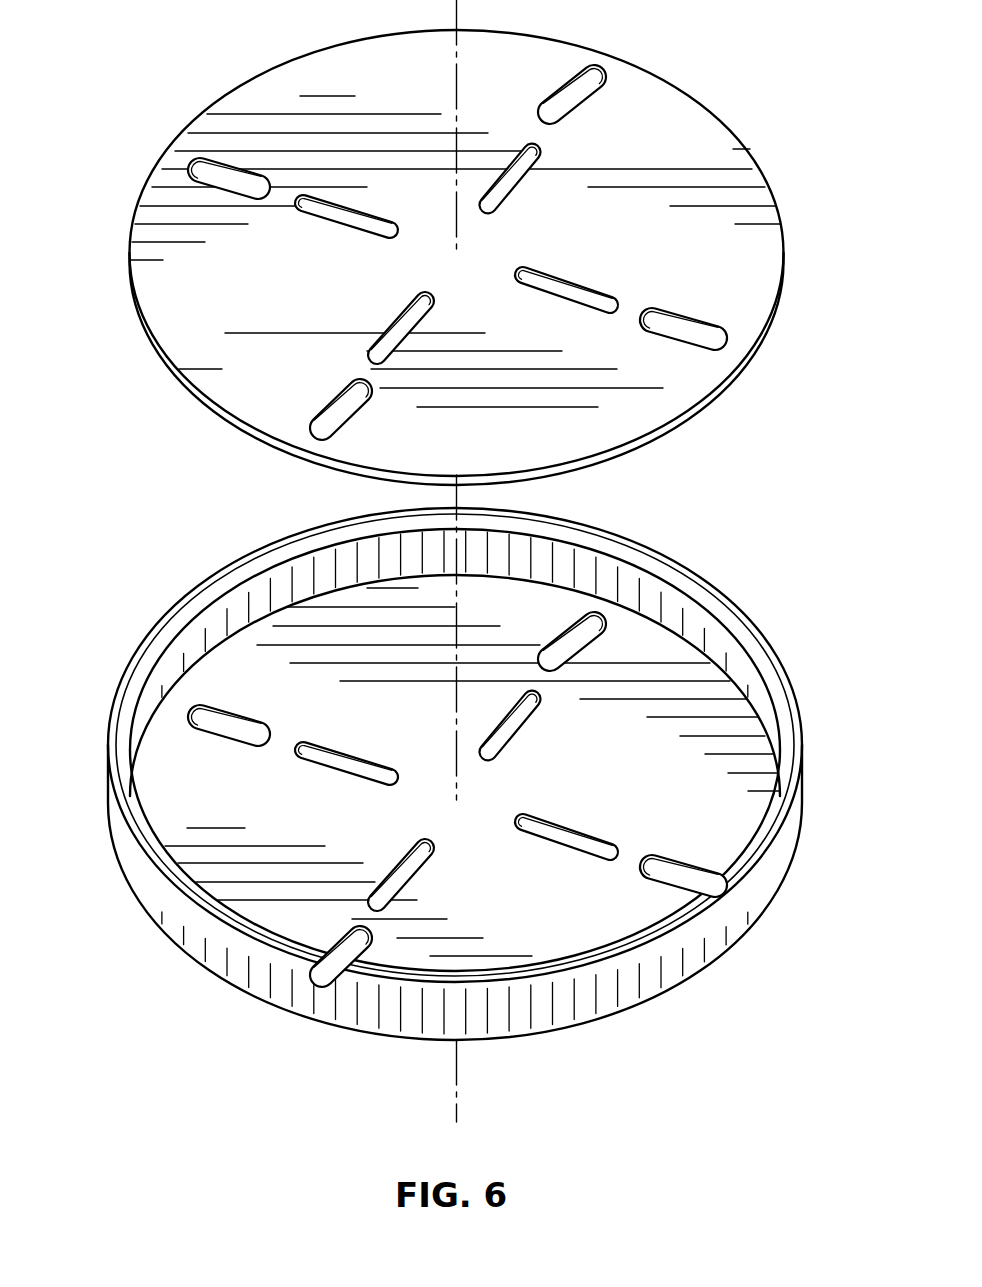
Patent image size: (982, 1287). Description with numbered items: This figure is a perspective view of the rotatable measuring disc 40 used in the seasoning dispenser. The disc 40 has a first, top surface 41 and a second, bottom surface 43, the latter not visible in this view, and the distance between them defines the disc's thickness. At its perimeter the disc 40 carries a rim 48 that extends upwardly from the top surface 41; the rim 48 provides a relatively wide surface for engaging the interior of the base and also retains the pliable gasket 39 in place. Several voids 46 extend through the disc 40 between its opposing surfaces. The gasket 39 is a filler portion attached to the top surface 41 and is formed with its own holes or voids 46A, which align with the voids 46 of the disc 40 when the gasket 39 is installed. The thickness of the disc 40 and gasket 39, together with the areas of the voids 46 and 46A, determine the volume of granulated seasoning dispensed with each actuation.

The gasket 39 is at (457, 257).
The disc 40 is at (447, 561).
The top surface 41 is at (403, 783).
The bottom surface 43 is at (439, 802).
The voids 46 is at (215, 745).
The gasket voids 46A is at (320, 221).
The rim 48 is at (760, 883).